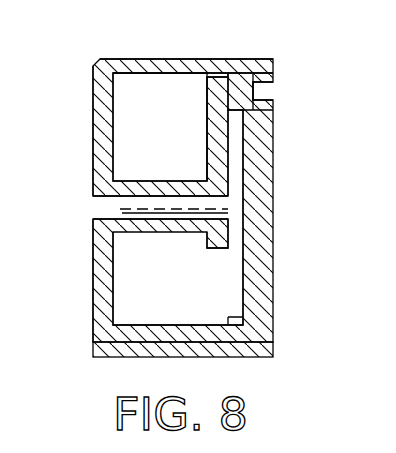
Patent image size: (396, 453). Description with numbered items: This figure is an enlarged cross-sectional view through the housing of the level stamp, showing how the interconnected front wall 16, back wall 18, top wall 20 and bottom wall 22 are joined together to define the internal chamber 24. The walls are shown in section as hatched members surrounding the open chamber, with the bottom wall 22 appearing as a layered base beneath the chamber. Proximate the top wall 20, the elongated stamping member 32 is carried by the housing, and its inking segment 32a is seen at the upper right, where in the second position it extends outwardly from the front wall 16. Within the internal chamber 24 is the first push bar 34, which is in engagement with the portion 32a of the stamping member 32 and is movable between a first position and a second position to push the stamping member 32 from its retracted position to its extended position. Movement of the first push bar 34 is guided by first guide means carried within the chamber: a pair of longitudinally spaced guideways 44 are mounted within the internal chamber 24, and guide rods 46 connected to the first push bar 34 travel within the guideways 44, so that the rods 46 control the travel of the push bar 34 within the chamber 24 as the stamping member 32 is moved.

The front wall 16 is at (273, 237).
The back wall 18 is at (93, 115).
The top wall 20 is at (167, 59).
The bottom wall 22 is at (257, 357).
The internal chamber 24 is at (178, 217).
The stamping member 32 is at (257, 102).
The inking segment 32a is at (255, 82).
The first push bar 34 is at (271, 148).
The guideways 44 is at (157, 181).
The guide rods 46 is at (122, 203).